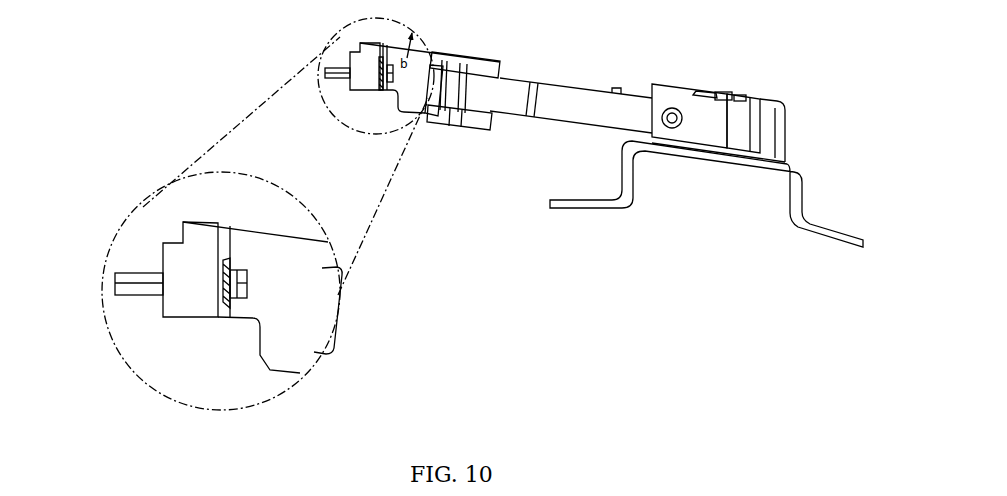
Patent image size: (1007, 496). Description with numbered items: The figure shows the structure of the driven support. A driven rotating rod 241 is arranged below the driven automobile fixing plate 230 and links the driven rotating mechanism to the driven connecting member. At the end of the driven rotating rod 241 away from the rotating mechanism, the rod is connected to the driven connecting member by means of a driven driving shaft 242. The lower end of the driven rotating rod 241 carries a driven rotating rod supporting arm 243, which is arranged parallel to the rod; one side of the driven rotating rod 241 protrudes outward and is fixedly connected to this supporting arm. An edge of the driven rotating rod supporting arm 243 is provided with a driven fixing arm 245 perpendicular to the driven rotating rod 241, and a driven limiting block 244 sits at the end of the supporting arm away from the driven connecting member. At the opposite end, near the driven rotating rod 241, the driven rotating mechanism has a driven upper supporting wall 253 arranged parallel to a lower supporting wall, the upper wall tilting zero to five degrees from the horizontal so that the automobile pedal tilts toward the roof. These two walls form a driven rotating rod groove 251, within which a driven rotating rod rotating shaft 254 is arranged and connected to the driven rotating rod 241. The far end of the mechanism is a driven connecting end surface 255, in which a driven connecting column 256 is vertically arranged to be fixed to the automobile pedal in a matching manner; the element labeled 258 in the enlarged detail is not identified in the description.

The driven automobile fixing plate 230 is at (687, 203).
The driven rotating rod 241 is at (571, 82).
The driven driving shaft 242 is at (794, 123).
The driven rotating rod supporting arm 243 is at (751, 68).
The driven limiting block 244 is at (777, 78).
The driven fixing arm 245 is at (763, 123).
The driven rotating rod groove 251 is at (462, 123).
The driven upper supporting wall 253 is at (485, 149).
The driven rotating rod rotating shaft 254 is at (504, 66).
The driven connecting end surface 255 is at (211, 180).
The driven connecting column 256 is at (187, 153).
The plate 258 is at (246, 215).